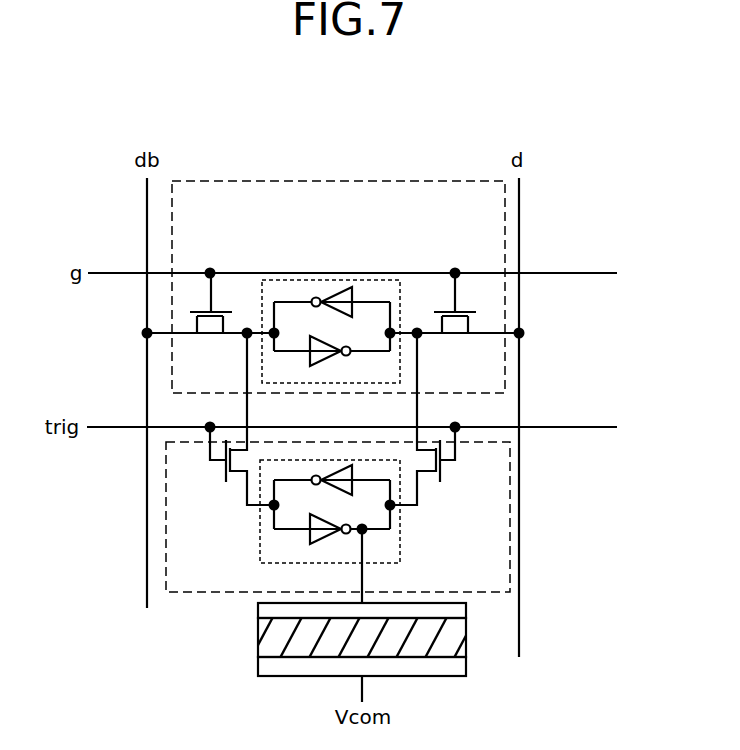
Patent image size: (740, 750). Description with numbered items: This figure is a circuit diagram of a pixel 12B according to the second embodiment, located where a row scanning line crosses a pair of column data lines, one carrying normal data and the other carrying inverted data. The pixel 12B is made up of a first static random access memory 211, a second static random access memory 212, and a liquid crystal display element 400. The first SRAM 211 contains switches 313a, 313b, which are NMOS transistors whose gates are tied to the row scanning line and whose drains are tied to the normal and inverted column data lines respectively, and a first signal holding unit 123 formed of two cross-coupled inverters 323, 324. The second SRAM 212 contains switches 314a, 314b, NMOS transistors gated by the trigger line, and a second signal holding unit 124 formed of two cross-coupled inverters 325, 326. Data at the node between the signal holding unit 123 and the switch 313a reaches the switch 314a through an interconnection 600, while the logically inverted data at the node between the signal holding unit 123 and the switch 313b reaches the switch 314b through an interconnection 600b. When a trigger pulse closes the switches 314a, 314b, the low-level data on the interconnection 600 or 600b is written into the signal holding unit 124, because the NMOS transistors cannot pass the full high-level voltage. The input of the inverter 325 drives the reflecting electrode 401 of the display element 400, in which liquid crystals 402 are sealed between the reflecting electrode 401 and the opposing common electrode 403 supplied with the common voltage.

The pixel 12B is at (442, 148).
The first static random access memory 211 is at (284, 181).
The second static random access memory 212 is at (188, 593).
The first signal holding unit 123 is at (364, 297).
The second signal holding unit 124 is at (337, 484).
The switch 313a is at (453, 320).
The switch 313b is at (212, 320).
The switch 314a is at (447, 470).
The switch 314b is at (227, 470).
The inverter 323 is at (343, 284).
The inverter 324 is at (328, 344).
The inverter 325 is at (318, 477).
The inverter 326 is at (310, 535).
The interconnection 600 is at (417, 388).
The interconnection 600b is at (247, 388).
The liquid crystal display element 400 is at (372, 652).
The reflecting electrode 401 is at (463, 610).
The liquid crystals 402 is at (463, 640).
The common electrode 403 is at (463, 672).